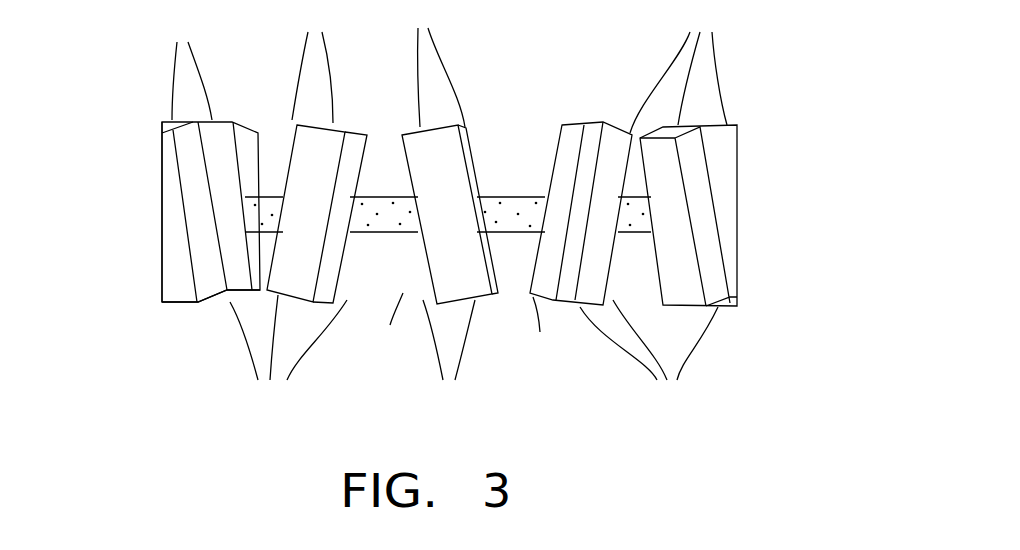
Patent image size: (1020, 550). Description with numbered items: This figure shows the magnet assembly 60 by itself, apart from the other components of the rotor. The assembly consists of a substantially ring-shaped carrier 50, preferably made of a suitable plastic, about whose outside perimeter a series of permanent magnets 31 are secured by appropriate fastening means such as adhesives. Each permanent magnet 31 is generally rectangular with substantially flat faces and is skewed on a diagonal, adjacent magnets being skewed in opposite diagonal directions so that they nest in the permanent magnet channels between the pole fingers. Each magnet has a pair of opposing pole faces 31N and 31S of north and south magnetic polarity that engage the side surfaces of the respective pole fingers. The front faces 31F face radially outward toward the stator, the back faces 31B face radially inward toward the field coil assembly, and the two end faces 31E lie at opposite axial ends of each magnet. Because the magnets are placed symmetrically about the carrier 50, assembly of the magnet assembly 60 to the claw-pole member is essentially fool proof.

The magnet assembly 60 is at (143, 143).
The permanent magnet 31 is at (445, 206).
The end face 31E is at (446, 210).
The front face 31F is at (297, 180).
The back face 31B is at (260, 280).
The north pole face 31N is at (260, 257).
The south pole face 31S is at (620, 243).
The carrier 50 is at (260, 213).